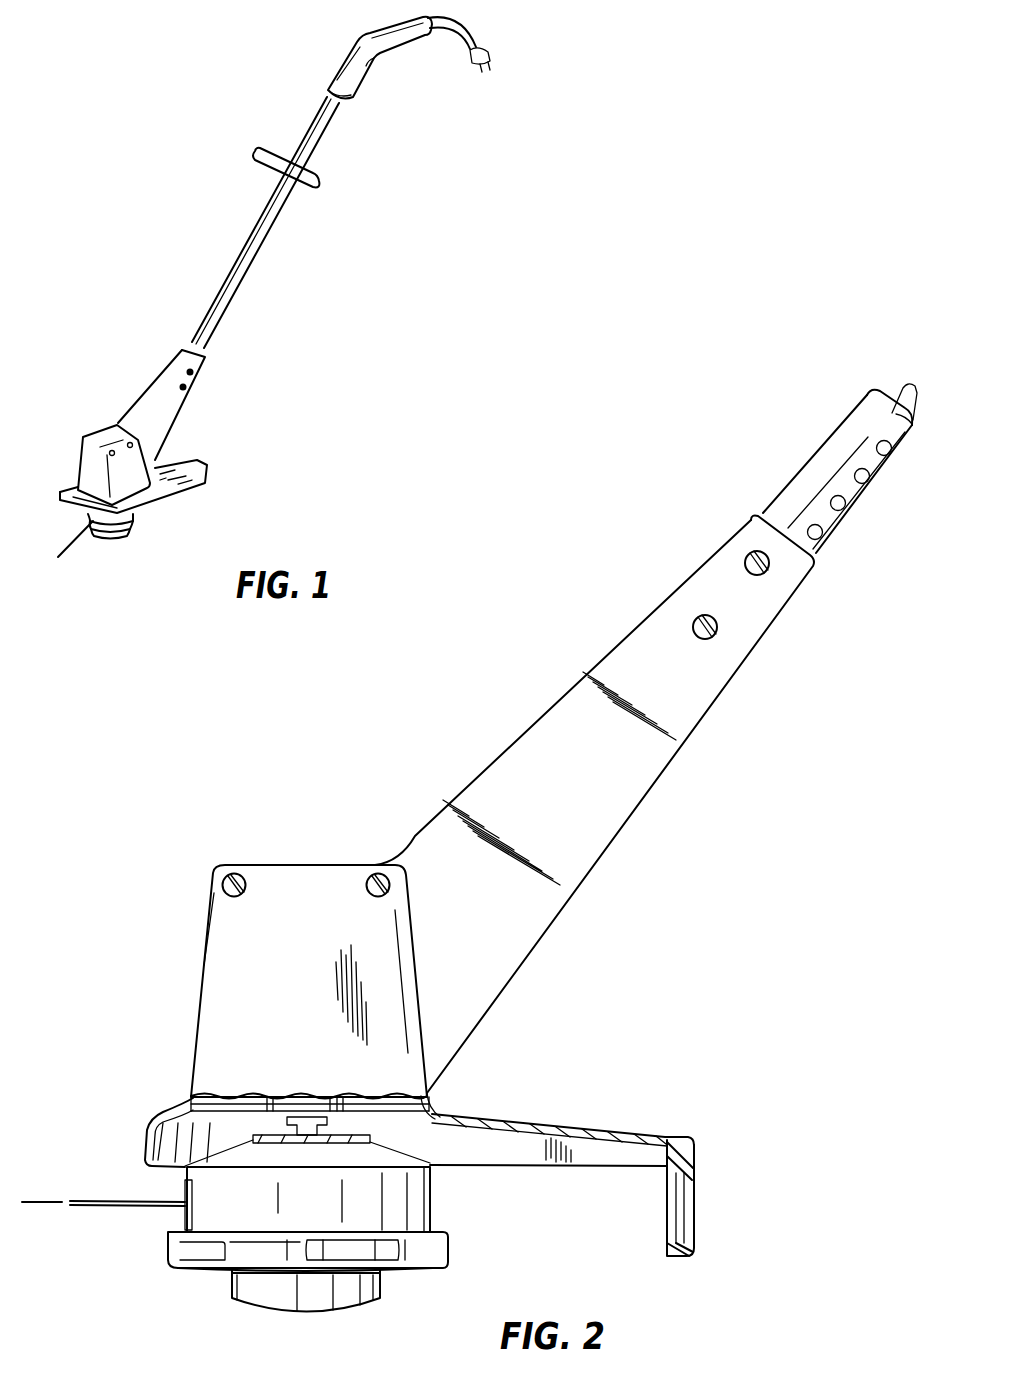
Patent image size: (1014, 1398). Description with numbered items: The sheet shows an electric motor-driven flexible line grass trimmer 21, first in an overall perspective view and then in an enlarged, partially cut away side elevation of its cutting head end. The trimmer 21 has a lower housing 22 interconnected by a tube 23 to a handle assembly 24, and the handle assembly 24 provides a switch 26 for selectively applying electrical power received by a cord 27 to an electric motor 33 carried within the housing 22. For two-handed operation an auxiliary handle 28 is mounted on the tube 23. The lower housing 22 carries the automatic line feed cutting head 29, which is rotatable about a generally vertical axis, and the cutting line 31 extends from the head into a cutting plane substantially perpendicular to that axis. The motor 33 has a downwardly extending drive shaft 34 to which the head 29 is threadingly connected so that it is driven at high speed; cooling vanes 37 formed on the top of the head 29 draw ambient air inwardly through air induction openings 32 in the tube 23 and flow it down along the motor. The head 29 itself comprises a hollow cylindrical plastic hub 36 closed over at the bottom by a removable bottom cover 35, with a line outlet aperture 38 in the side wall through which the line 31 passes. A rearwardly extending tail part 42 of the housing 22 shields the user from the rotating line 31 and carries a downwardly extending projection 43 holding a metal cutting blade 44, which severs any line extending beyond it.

In FIG. 1, the grass trimmer 21 is at (238, 231).
In FIG. 1, the lower housing 22 is at (152, 390).
In FIG. 2, the lower housing 22 is at (600, 660).
In FIG. 1, the tube 23 is at (245, 286).
In FIG. 2, the tube 23 is at (786, 492).
In FIG. 1, the handle assembly 24 is at (377, 33).
In FIG. 1, the switch 26 is at (375, 58).
In FIG. 1, the cord 27 is at (466, 30).
In FIG. 1, the auxiliary handle 28 is at (255, 154).
In FIG. 1, the automatic line feed cutting head 29 is at (132, 527).
In FIG. 2, the automatic line feed cutting head 29 is at (436, 1213).
In FIG. 1, the cutting line 31 is at (76, 530).
In FIG. 2, the cutting line 31 is at (107, 1198).
In FIG. 2, the air induction openings 32 is at (824, 522).
In FIG. 2, the electric motor 33 is at (298, 1098).
In FIG. 2, the drive shaft 34 is at (284, 1122).
In FIG. 2, the bottom cover 35 is at (447, 1244).
In FIG. 2, the hub 36 is at (432, 1188).
In FIG. 2, the cooling vanes 37 is at (360, 1142).
In FIG. 2, the line outlet aperture 38 is at (178, 1213).
In FIG. 1, the tail part 42 is at (203, 466).
In FIG. 2, the tail part 42 is at (524, 1116).
In FIG. 2, the downwardly extending projection 43 is at (680, 1257).
In FIG. 2, the metal cutting blade 44 is at (698, 1196).